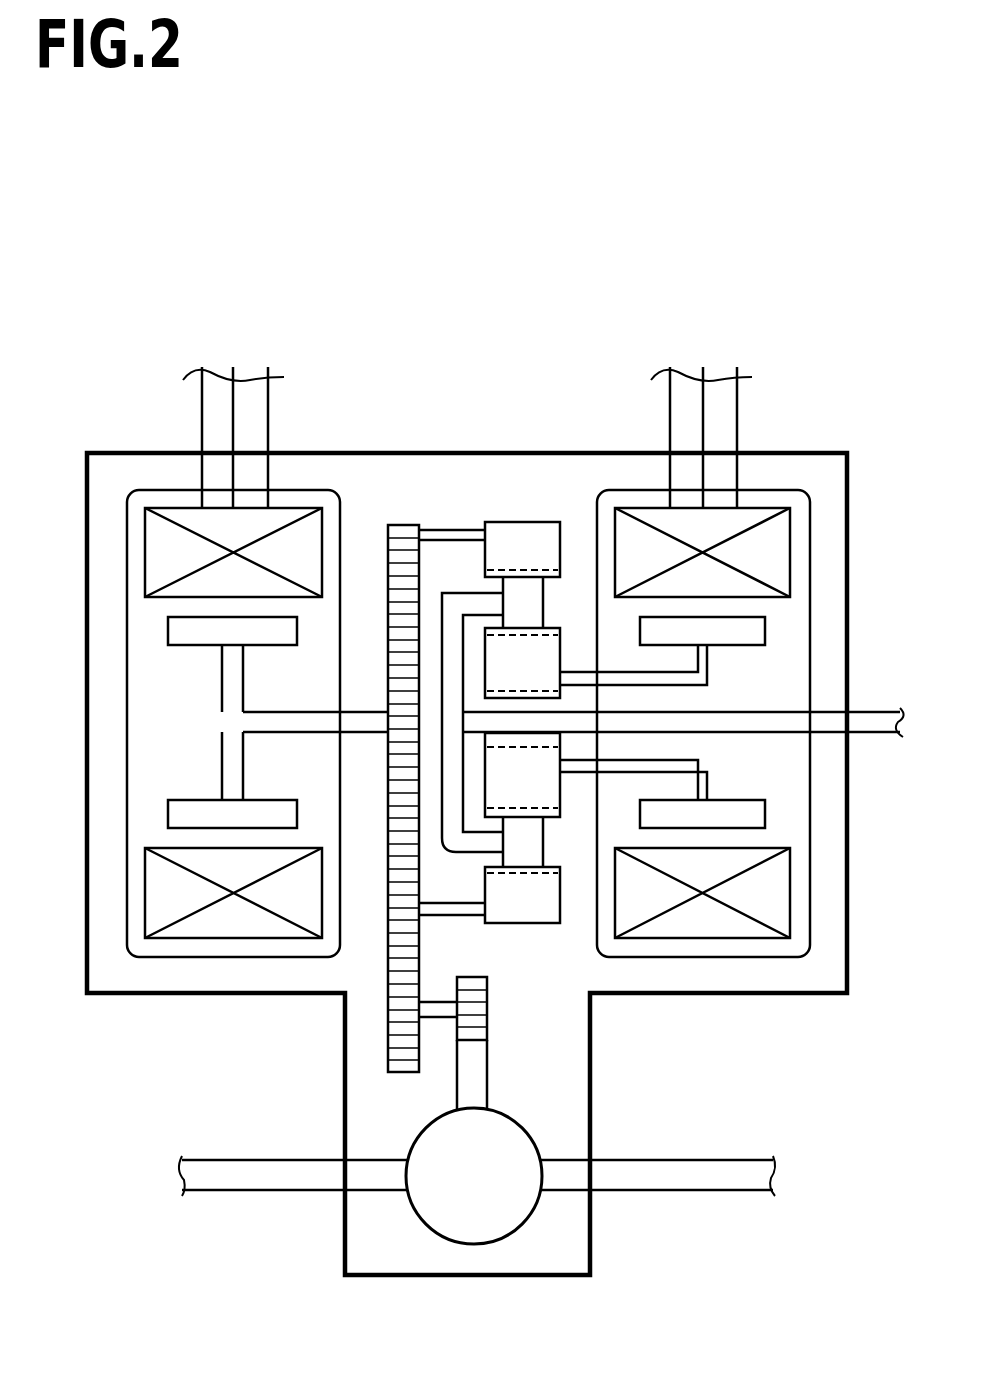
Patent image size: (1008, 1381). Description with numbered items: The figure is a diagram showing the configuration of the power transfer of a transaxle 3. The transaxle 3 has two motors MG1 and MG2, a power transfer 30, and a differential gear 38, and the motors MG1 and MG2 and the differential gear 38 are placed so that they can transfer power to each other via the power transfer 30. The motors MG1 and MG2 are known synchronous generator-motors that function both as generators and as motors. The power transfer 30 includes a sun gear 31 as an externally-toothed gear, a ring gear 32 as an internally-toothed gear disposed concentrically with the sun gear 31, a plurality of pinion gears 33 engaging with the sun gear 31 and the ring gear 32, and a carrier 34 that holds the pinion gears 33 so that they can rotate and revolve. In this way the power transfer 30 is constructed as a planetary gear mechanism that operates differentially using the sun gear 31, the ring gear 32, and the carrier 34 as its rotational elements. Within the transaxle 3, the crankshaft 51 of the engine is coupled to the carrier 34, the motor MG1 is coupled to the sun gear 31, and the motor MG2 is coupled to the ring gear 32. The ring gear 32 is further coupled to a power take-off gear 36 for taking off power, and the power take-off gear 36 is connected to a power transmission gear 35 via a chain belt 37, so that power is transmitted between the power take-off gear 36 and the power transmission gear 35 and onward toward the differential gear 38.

The transaxle 3 is at (196, 277).
The power transfer 30 is at (480, 487).
The sun gear 31 is at (545, 655).
The ring gear 32 is at (533, 530).
The pinion gears 33 is at (535, 593).
The carrier 34 is at (452, 598).
The power transmission gear 35 is at (388, 1028).
The power take-off gear 36 is at (388, 540).
The chain belt 37 is at (388, 892).
The differential gear 38 is at (428, 1210).
The crankshaft 51 is at (865, 718).
The motor MG1 is at (698, 958).
The motor MG2 is at (220, 958).